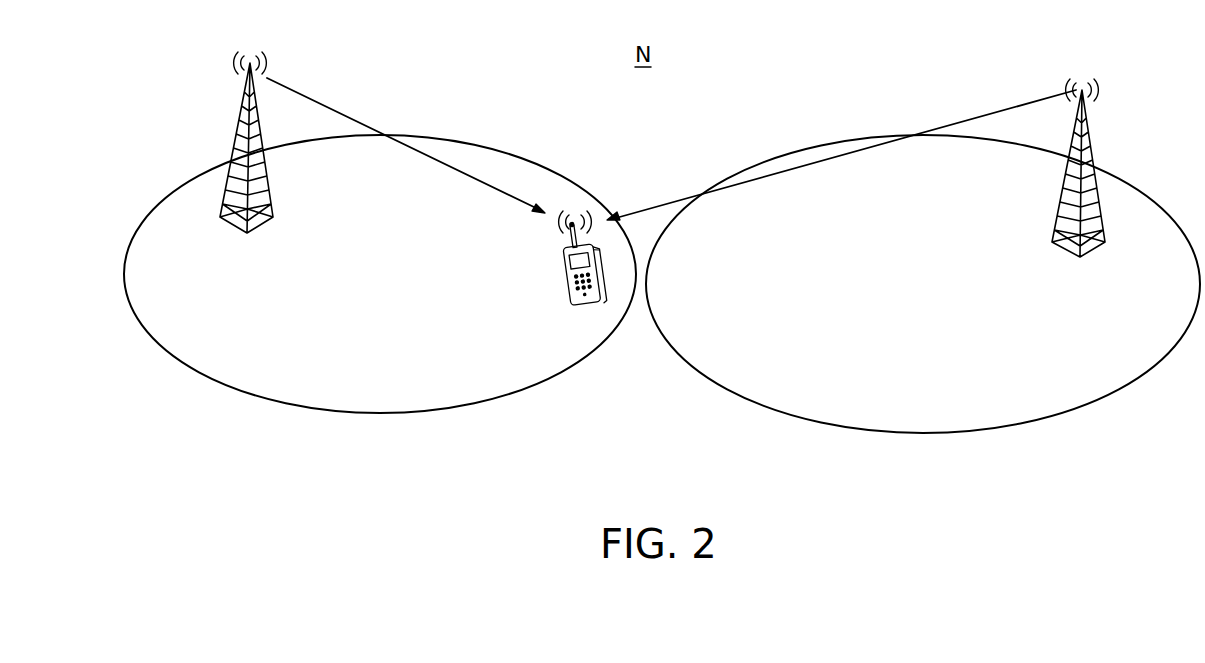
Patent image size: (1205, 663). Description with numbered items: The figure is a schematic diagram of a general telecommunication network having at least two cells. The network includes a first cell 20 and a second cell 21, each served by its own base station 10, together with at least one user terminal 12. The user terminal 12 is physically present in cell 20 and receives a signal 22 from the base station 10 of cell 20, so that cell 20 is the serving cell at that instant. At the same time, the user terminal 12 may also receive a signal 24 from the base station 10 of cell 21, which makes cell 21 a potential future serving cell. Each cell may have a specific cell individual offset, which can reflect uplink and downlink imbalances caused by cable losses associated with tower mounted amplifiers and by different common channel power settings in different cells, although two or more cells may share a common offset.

The base station 10 is at (233, 137).
The user terminal 12 is at (565, 275).
The cell 20 is at (355, 413).
The cell 21 is at (925, 433).
The signal 22 is at (368, 124).
The signal 24 is at (957, 118).